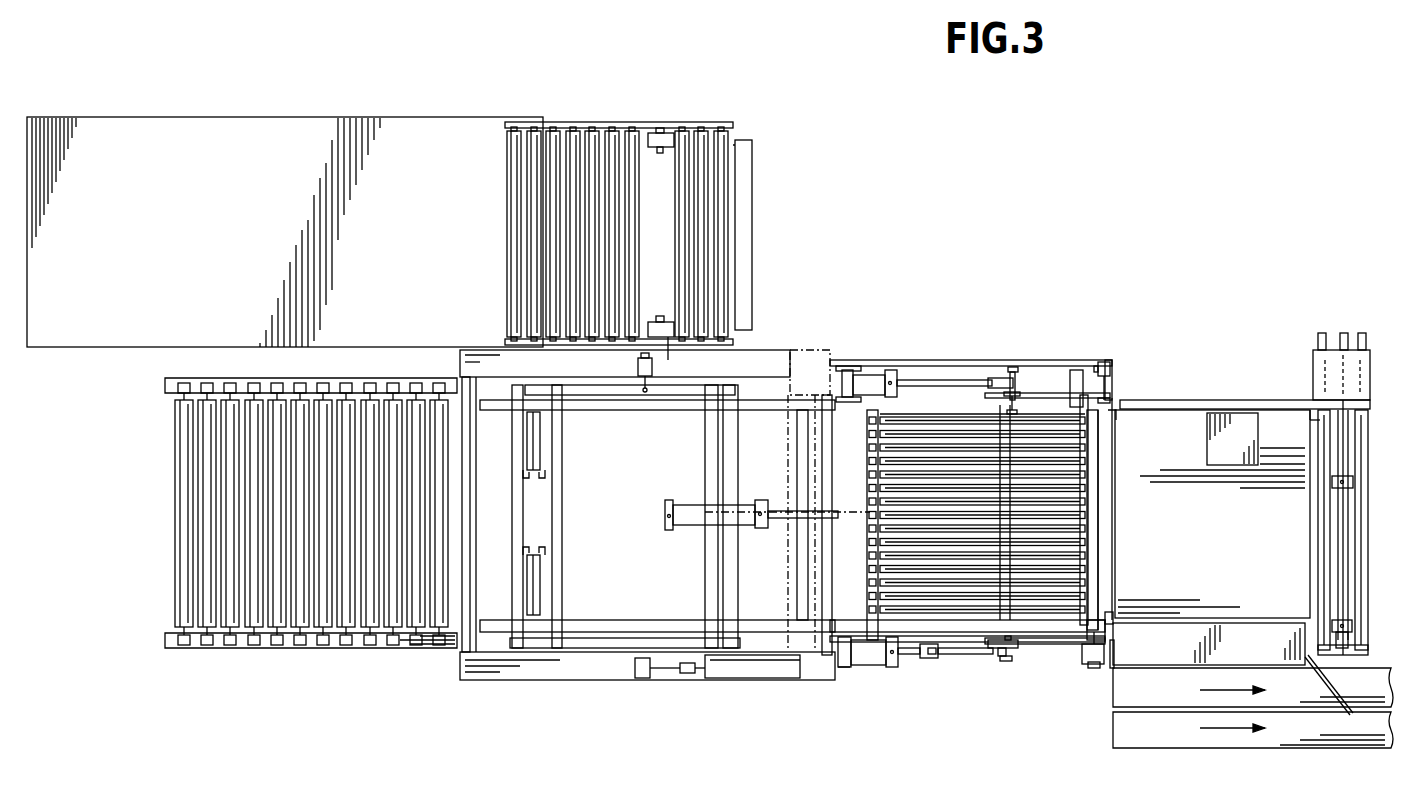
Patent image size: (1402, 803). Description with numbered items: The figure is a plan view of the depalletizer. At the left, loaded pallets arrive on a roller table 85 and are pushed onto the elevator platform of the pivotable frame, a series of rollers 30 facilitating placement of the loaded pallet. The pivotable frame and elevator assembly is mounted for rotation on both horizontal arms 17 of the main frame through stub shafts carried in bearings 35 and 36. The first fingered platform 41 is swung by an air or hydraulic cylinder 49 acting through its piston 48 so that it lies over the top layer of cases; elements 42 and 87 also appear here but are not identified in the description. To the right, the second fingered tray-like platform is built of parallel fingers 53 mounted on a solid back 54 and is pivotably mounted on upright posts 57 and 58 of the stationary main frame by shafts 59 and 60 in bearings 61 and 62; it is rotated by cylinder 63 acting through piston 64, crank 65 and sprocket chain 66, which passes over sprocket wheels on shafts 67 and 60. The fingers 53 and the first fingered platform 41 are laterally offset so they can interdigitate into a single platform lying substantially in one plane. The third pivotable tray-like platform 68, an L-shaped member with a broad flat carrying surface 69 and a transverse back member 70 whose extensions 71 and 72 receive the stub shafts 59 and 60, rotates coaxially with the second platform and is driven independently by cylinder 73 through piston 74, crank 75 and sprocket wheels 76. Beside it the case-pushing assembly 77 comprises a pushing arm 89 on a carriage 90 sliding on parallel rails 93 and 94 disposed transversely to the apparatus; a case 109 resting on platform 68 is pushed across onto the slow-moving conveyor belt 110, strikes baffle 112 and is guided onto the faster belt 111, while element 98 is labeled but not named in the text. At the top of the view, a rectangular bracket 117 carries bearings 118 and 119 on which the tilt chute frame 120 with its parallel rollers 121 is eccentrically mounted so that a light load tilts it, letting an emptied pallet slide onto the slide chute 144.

The horizontal arms 17 is at (754, 350).
The rollers 30 is at (296, 527).
The bearing 35 is at (636, 361).
The bearing 36 is at (640, 674).
The first fingered platform 41 is at (992, 493).
The rack bar with holes 42 is at (866, 468).
The piston 48 is at (782, 502).
The cylinder 49 is at (690, 500).
The parallel fingers 53 is at (940, 416).
The solid back 54 is at (1114, 448).
The upright post 57 is at (1112, 694).
The upright post 58 is at (1108, 362).
The shaft 59 is at (1086, 660).
The shaft 60 is at (1108, 382).
The bearing 61 is at (1108, 668).
The bearing 62 is at (1086, 368).
The cylinder 63 is at (855, 370).
The piston 64 is at (912, 380).
The crank 65 is at (1030, 344).
The sprocket chain 66 is at (1062, 387).
The shaft 67 is at (1004, 376).
The third pivotable tray-like platform 68 is at (1298, 412).
The carrying surface 69 is at (1212, 514).
The transverse back member 70 is at (1110, 544).
The extension 71 is at (1108, 638).
The extension 72 is at (1116, 418).
The cylinder 73 is at (877, 662).
The piston 74 is at (914, 656).
The crank 75 is at (987, 656).
The sprocket wheel 76 is at (1062, 645).
The case-pushing assembly 77 is at (1368, 500).
The roller table 85 is at (404, 651).
The guide bracket 87 is at (526, 448).
The pushing arm 89 is at (1153, 400).
The carriage 90 is at (1313, 358).
The rail 93 is at (1318, 420).
The rail 94 is at (1364, 434).
The carriage 98 is at (1340, 556).
The case 109 is at (1206, 432).
The conveyor belt 110 is at (1253, 687).
The conveyor belt 111 is at (1112, 737).
The baffle 112 is at (1312, 680).
The rectangular bracket 117 is at (636, 235).
The bearing 118 is at (652, 130).
The bearing 119 is at (668, 360).
The tilt chute frame 120 is at (676, 118).
The rollers 121 is at (509, 160).
The slide chute 144 is at (246, 116).